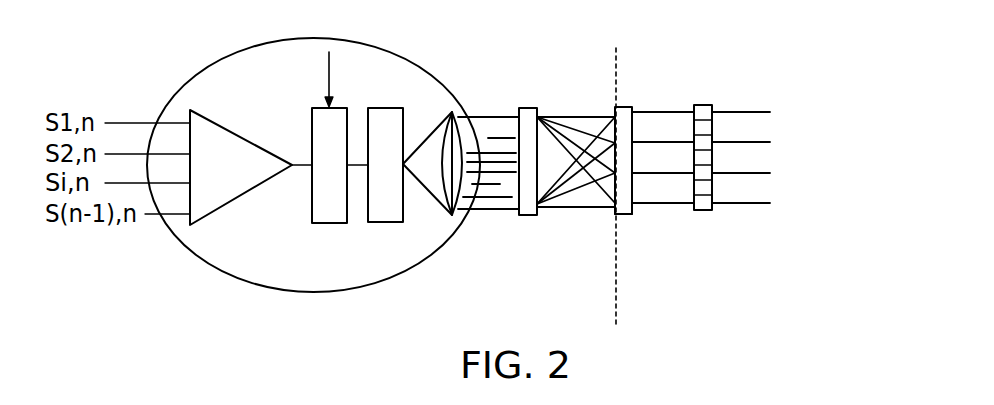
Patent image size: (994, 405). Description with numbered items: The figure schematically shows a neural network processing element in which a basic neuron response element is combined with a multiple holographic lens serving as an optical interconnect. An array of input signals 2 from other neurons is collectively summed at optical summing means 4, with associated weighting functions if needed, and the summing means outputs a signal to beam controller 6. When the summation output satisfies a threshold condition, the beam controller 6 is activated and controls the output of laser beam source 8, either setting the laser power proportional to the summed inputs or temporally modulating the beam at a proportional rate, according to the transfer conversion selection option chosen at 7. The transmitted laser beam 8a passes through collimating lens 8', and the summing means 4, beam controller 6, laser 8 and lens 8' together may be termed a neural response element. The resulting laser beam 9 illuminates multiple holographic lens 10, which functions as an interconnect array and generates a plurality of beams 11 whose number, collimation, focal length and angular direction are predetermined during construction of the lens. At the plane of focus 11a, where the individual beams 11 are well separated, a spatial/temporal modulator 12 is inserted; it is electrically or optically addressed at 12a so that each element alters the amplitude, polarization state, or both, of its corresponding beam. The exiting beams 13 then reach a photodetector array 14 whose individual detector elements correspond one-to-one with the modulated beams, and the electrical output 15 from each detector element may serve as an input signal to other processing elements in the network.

The input signals 2 is at (109, 105).
The optical summing means 4 is at (248, 140).
The beam controller 6 is at (312, 135).
The transfer conversion selection option 7 is at (316, 79).
The laser beam source 8 is at (383, 137).
The transmitted laser beam 8a is at (423, 141).
The collimating lens 8' is at (456, 117).
The laser beam 9 is at (488, 115).
The multiple holographic lens 10 is at (527, 107).
The plurality of beams 11 is at (575, 100).
The plane of focus 11a is at (618, 77).
The spatial/temporal modulator 12 is at (612, 107).
The modulator addressing input 12a is at (627, 221).
The exiting beams 13 is at (664, 95).
The photodetector array 14 is at (702, 105).
The electrical output 15 is at (745, 100).